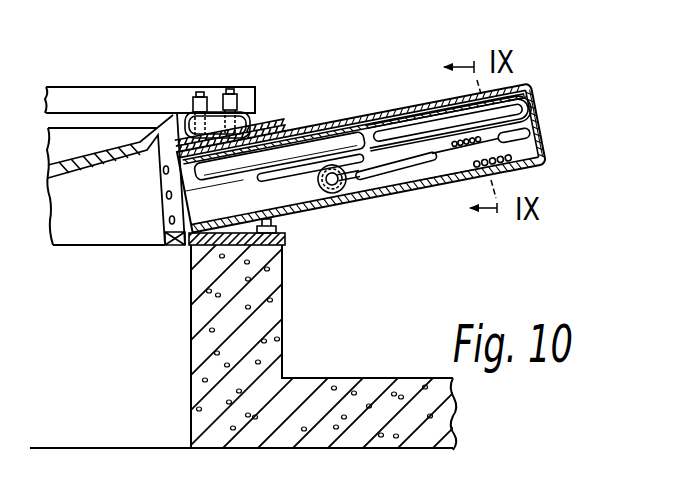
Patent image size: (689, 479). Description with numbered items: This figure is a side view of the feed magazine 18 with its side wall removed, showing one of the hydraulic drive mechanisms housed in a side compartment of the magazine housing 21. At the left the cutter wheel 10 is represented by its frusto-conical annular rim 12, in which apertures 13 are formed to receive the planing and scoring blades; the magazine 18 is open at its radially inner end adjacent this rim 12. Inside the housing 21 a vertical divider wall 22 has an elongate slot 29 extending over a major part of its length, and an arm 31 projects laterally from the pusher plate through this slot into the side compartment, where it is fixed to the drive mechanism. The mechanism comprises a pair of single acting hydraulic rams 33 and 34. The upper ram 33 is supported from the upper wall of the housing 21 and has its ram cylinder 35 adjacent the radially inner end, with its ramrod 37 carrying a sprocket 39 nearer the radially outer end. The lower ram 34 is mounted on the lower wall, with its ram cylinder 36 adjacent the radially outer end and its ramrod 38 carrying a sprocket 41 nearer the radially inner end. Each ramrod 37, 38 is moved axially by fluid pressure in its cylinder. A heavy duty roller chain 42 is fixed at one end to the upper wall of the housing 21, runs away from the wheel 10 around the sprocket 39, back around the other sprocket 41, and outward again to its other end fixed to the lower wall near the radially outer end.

The cutter wheel 10 is at (73, 238).
The frusto-conical annular rim 12 is at (168, 243).
The apertures 13 is at (163, 212).
The feed magazine 18 is at (533, 83).
The housing 21 is at (550, 154).
The vertical divider wall 22 is at (277, 193).
The elongate slot 29 is at (295, 173).
The arm 31 is at (524, 133).
The hydraulic ram 33 is at (337, 132).
The hydraulic ram 34 is at (426, 175).
The ram cylinder 35 is at (297, 153).
The ram cylinder 36 is at (524, 167).
The ramrod 37 is at (400, 130).
The ramrod 38 is at (353, 177).
The sprocket 39 is at (522, 103).
The sprocket 41 is at (327, 183).
The heavy duty roller chain 42 is at (268, 136).